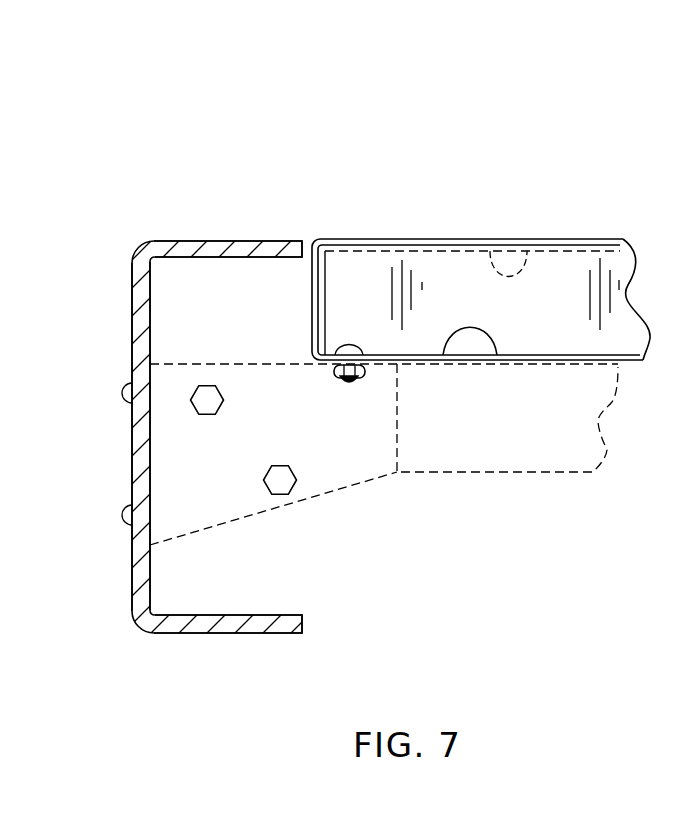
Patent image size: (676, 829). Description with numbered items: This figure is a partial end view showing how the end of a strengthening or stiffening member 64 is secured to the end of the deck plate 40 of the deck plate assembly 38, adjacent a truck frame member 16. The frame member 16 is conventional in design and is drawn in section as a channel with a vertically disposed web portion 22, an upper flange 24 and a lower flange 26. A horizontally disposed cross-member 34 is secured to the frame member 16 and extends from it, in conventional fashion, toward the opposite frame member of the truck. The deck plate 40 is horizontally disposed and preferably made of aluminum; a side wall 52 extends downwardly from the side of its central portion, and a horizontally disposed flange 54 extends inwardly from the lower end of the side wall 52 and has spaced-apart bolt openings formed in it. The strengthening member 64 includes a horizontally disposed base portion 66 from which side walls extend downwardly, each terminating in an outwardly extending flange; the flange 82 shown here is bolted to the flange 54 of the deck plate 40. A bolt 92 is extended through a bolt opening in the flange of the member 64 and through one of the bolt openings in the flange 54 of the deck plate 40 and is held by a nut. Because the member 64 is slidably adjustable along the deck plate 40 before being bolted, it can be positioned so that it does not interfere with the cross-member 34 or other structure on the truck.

The frame member 16 is at (213, 410).
The web portion 22 is at (140, 464).
The upper flange 24 is at (203, 240).
The lower flange 26 is at (218, 626).
The cross-member 34 is at (447, 443).
The deck plate assembly 38 is at (481, 322).
The deck plate 40 is at (589, 241).
The side wall 52 is at (320, 307).
The flange 54 is at (320, 367).
The strengthening member 64 is at (325, 273).
The base portion 66 is at (527, 277).
The flange 82 is at (470, 327).
The bolt 92 is at (348, 382).